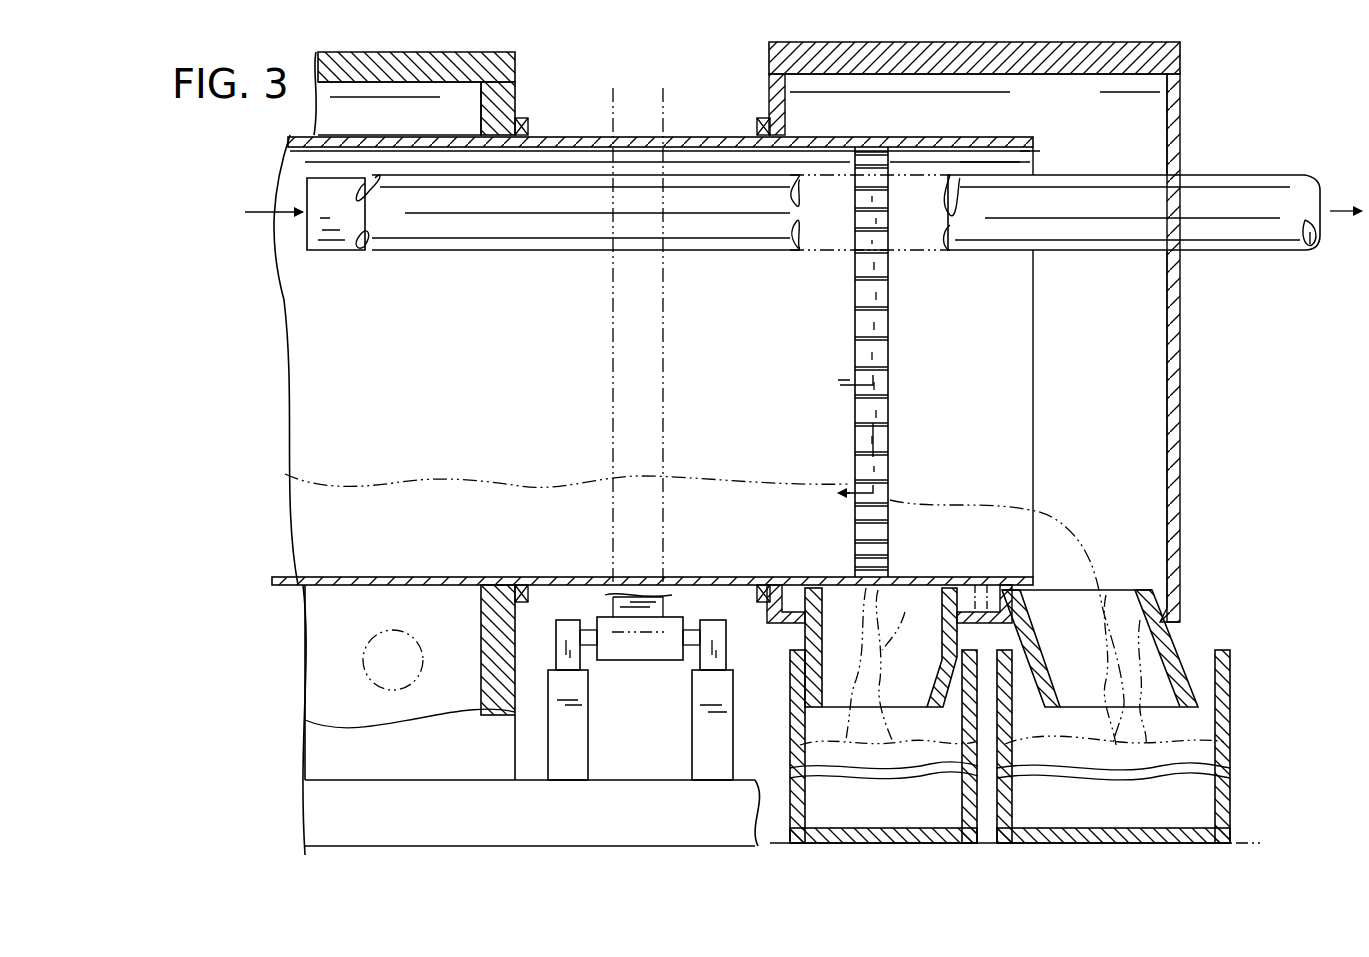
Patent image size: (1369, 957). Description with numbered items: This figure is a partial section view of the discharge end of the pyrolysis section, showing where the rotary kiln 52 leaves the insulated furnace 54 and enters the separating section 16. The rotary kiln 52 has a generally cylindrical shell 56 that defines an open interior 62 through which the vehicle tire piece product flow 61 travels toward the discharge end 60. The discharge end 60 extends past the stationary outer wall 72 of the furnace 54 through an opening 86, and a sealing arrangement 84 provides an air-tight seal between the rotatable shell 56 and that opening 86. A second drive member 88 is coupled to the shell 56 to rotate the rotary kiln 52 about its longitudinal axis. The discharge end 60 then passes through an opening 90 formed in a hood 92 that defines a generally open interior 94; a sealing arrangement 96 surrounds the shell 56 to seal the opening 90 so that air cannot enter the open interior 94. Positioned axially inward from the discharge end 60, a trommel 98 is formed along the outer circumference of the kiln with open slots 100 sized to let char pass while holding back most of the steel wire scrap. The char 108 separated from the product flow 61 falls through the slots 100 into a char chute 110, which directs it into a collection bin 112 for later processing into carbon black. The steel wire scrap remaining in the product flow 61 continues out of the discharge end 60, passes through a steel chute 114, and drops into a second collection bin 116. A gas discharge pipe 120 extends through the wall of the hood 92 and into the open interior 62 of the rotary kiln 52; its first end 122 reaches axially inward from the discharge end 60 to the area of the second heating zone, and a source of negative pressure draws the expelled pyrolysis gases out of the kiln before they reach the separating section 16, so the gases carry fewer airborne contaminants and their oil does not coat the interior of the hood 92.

The separating section 16 is at (1029, 311).
The rotary kiln 52 is at (604, 86).
The insulated furnace 54 is at (410, 44).
The cylindrical shell 56 is at (680, 137).
The discharge end 60 is at (1020, 140).
The product flow 61 is at (400, 490).
The open interior 62 is at (434, 320).
The outer wall 72 is at (512, 66).
The sealing arrangement 84 is at (528, 120).
The opening 86 is at (490, 578).
The second drive member 88 is at (640, 645).
The opening 90 is at (778, 130).
The hood 92 is at (858, 48).
The open interior 94 is at (1150, 340).
The sealing arrangement 96 is at (763, 122).
The trommel 98 is at (894, 362).
The open slots 100 is at (876, 395).
The char 108 is at (1012, 666).
The char chute 110 is at (815, 632).
The collection bin 112 is at (855, 842).
The steel chute 114 is at (1172, 632).
The collection bin 116 is at (1230, 722).
The gas discharge pipe 120 is at (767, 193).
The first end 122 is at (305, 232).